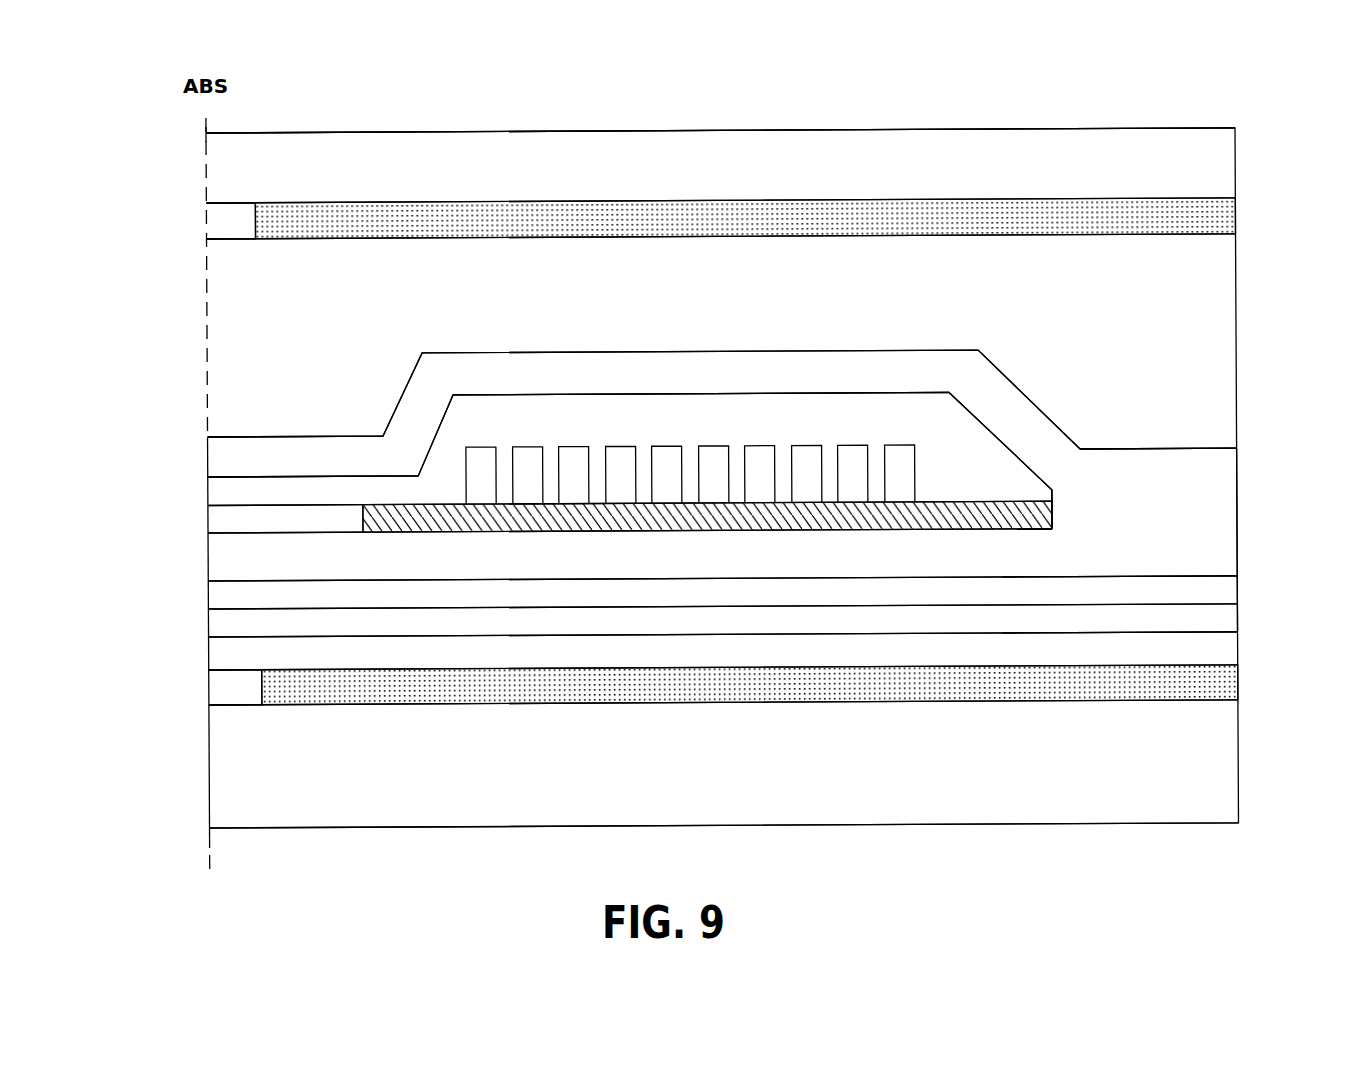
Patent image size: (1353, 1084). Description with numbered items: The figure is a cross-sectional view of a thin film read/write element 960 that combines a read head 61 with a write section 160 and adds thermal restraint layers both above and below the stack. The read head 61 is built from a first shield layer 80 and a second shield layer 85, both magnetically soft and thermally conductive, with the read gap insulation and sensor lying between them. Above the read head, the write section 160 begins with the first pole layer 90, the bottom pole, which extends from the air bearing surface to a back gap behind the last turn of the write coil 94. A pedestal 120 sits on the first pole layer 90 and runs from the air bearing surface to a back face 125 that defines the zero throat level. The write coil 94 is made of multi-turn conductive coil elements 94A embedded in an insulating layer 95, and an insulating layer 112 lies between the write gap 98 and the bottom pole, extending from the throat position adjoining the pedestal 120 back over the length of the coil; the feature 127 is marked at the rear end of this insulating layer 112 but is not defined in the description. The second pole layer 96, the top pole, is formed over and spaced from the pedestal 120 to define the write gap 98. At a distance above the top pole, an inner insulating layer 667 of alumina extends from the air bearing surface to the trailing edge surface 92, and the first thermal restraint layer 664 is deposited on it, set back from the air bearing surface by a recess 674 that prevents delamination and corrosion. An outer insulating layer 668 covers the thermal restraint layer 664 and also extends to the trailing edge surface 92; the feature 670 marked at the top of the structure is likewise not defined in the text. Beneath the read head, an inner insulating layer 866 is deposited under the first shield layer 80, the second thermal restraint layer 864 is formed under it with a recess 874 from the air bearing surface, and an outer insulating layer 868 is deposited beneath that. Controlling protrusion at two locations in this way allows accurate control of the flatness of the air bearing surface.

The thin film read/write element 960 is at (705, 64).
The overcoat layer 670 is at (487, 129).
The outer insulating layer 668 is at (977, 152).
The thermal restraint layer 664 is at (287, 223).
The recess 674 is at (212, 225).
The inner insulating layer 667 is at (218, 365).
The second pole layer 96 is at (238, 472).
The write section 160 is at (178, 477).
The write coil 94 is at (779, 392).
The insulating layer 95 is at (718, 432).
The coil elements 94A is at (805, 465).
The write gap 98 is at (227, 495).
The pedestal 120 is at (203, 522).
The back face 125 is at (363, 520).
The insulating layer 112 is at (718, 520).
The back edge of insulation 127 is at (1053, 520).
The first pole layer 90 is at (722, 554).
The second shield layer 85 is at (722, 592).
The first shield layer 80 is at (722, 620).
The trailing edge surface 92 is at (1240, 513).
The read head 61 is at (1245, 588).
The inner insulating layer 866 is at (232, 656).
The thermal restraint layer 864 is at (1212, 687).
The recess 874 is at (243, 690).
The outer insulating layer 868 is at (550, 803).